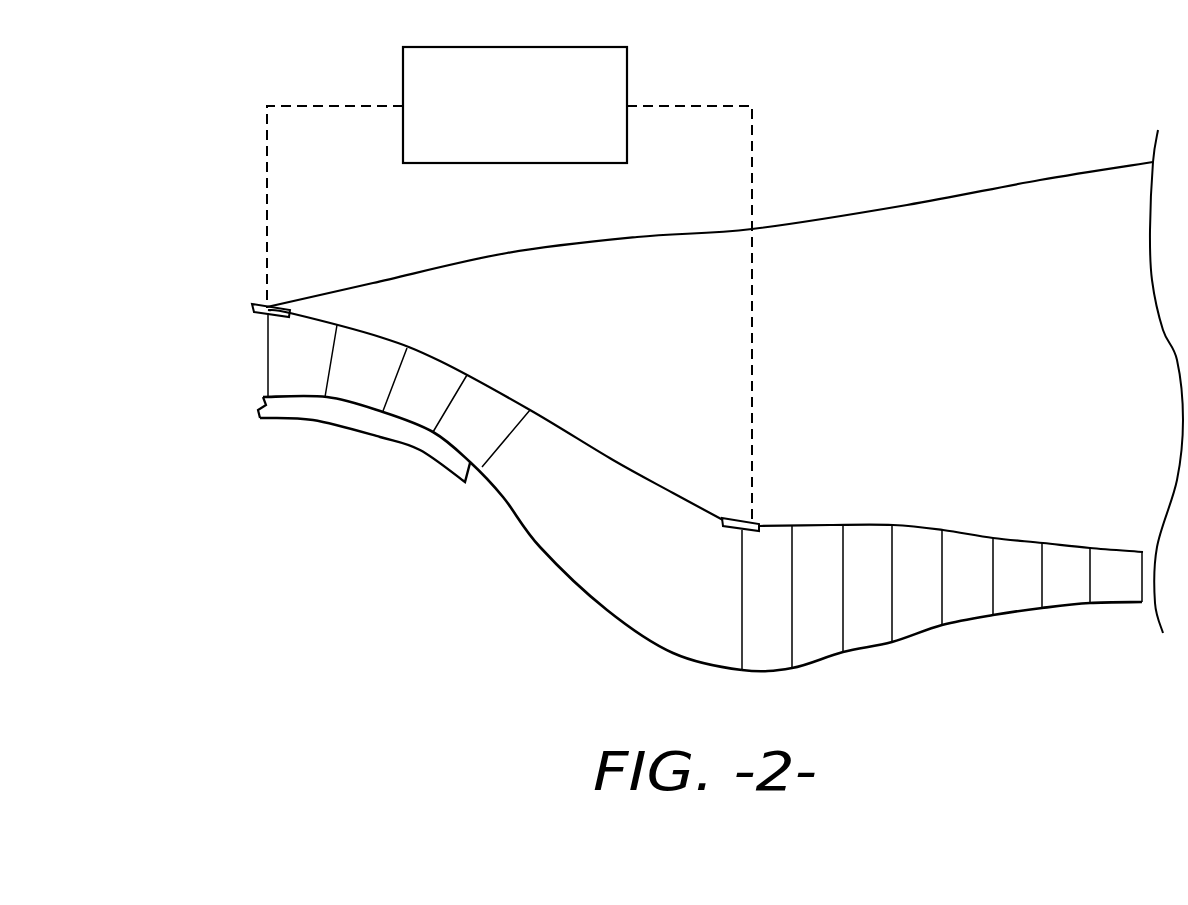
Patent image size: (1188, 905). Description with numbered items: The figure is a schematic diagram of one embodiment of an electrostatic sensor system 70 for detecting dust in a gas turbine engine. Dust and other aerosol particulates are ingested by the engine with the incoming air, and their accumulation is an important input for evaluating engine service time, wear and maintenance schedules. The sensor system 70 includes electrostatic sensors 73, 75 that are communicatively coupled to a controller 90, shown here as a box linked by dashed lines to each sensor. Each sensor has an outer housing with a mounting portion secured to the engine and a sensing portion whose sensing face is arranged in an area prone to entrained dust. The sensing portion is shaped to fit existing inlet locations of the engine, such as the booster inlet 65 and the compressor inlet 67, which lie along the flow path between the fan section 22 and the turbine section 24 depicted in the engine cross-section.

The fan section 22 is at (378, 335).
The turbine section 24 is at (823, 662).
The booster inlet 65 is at (246, 369).
The compressor inlet 67 is at (726, 621).
The sensor system 70 is at (957, 115).
The electrostatic sensor 73 is at (262, 318).
The electrostatic sensor 75 is at (728, 526).
The controller 90 is at (527, 134).